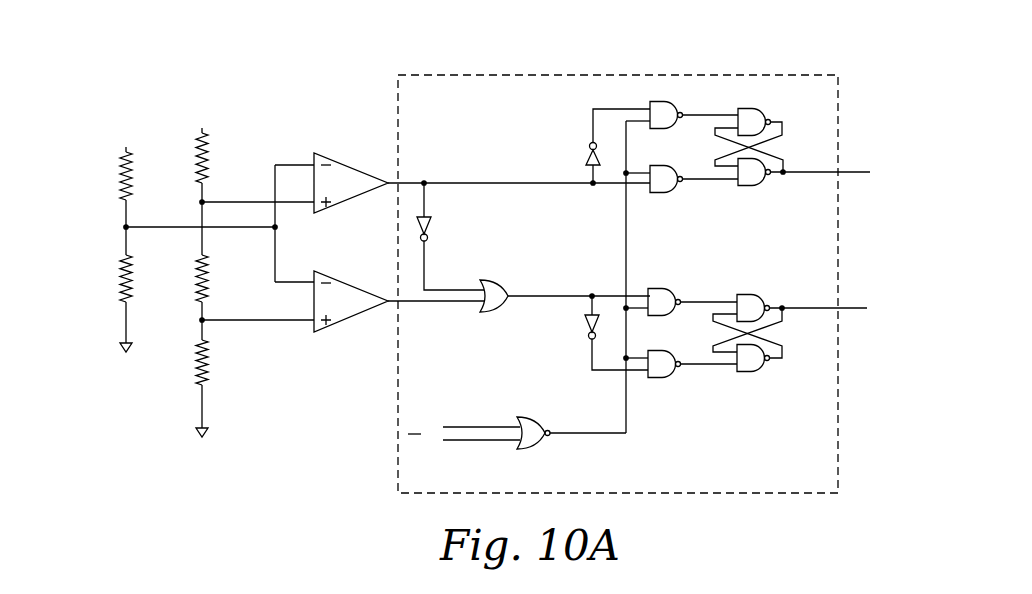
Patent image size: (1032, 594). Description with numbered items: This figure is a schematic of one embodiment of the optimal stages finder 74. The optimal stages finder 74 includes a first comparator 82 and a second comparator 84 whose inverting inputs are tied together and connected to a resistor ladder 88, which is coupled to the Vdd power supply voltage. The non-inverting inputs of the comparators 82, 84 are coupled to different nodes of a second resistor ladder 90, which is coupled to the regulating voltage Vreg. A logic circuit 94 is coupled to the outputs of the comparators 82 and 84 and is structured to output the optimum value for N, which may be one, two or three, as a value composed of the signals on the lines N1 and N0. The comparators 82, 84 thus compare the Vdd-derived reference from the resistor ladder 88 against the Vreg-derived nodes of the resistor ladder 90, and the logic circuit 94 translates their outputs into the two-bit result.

The optimal stages finder 74 is at (150, 68).
The first comparator 82 is at (350, 166).
The second comparator 84 is at (362, 288).
The resistor ladder 88 is at (126, 148).
The second resistor ladder 90 is at (205, 130).
The logic circuit 94 is at (808, 74).